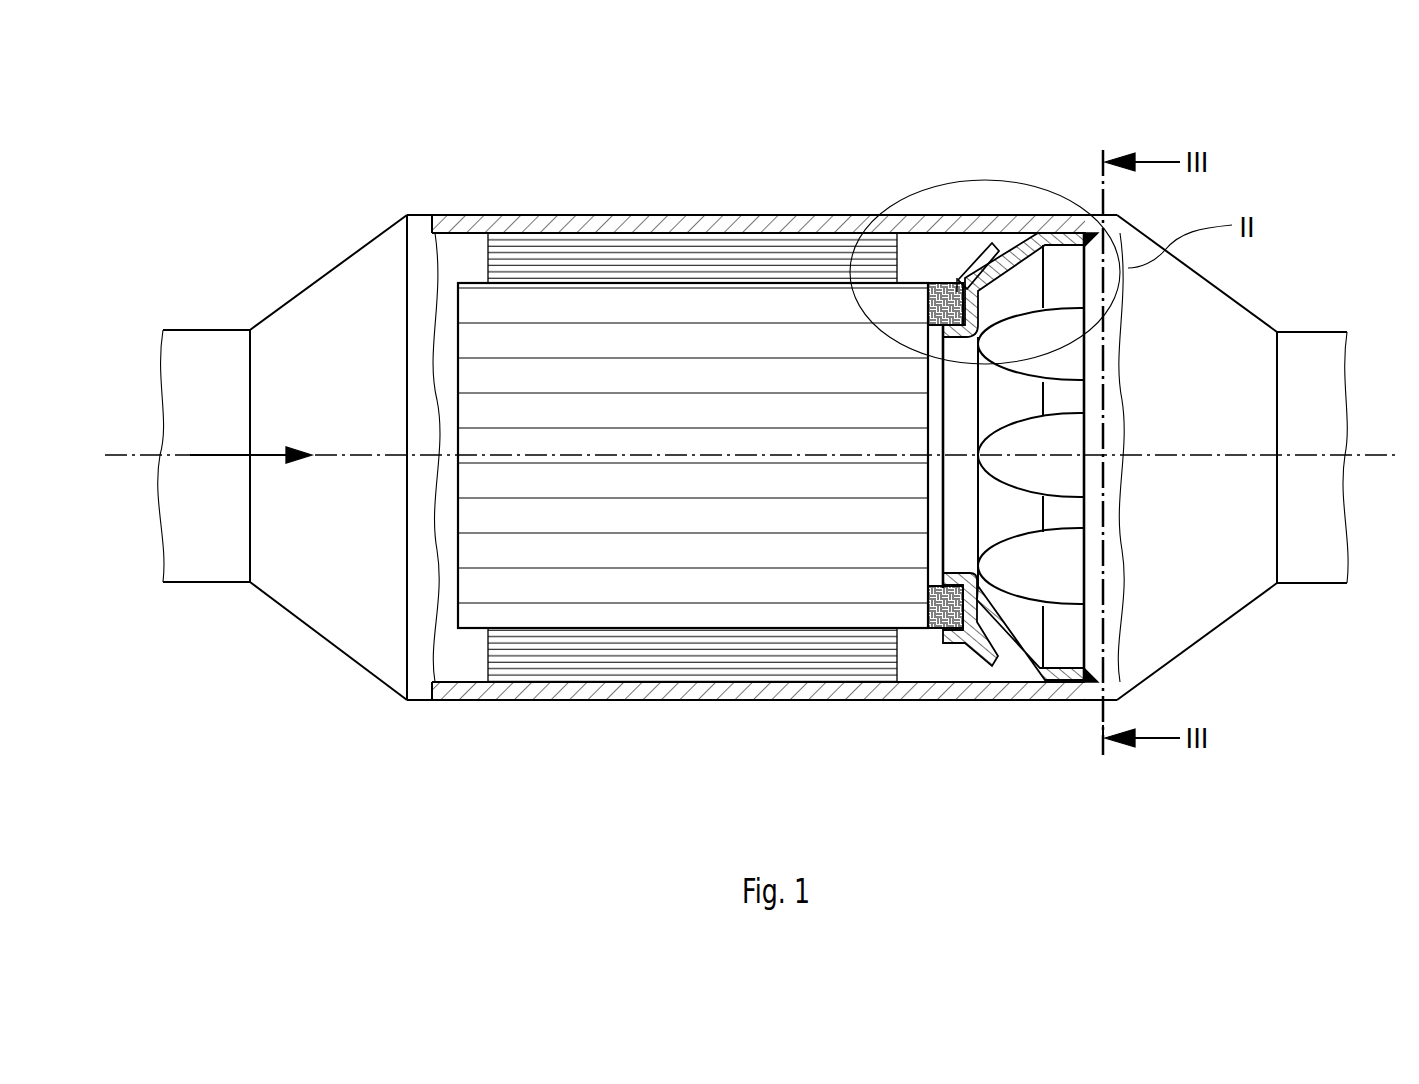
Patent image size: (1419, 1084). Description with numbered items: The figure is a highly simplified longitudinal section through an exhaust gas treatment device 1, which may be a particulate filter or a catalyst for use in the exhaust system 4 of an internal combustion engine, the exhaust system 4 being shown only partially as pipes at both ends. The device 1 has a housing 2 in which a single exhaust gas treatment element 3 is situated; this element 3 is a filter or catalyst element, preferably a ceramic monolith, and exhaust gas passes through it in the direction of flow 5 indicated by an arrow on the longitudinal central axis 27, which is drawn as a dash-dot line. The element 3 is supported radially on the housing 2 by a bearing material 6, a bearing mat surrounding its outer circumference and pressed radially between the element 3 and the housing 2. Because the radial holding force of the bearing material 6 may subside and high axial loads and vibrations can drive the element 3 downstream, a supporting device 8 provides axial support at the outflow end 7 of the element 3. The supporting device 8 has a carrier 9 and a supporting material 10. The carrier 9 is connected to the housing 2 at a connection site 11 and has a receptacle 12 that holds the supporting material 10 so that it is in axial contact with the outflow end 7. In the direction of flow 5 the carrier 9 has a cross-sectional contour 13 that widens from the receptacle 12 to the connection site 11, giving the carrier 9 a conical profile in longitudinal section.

The exhaust gas treatment device 1 is at (280, 179).
The housing 2 is at (543, 200).
The exhaust gas treatment element 3 is at (704, 409).
The exhaust system 4 is at (207, 322).
The direction of flow 5 is at (225, 456).
The bearing material 6 is at (657, 255).
The outflow end 7 is at (930, 513).
The supporting device 8 is at (986, 236).
The carrier 9 is at (1000, 662).
The supporting material 10 is at (934, 283).
The connection site 11 is at (1085, 682).
The receptacle 12 is at (952, 278).
The cross-sectional contour 13 is at (1043, 682).
The longitudinal central axis 27 is at (125, 455).